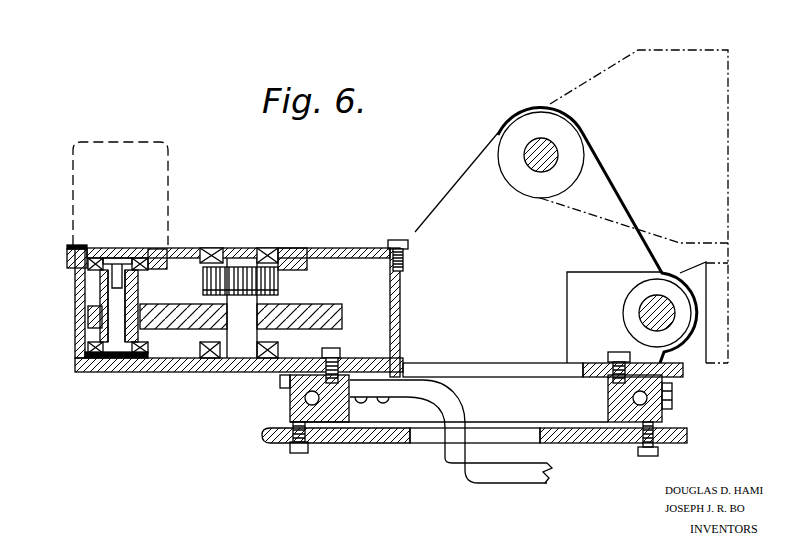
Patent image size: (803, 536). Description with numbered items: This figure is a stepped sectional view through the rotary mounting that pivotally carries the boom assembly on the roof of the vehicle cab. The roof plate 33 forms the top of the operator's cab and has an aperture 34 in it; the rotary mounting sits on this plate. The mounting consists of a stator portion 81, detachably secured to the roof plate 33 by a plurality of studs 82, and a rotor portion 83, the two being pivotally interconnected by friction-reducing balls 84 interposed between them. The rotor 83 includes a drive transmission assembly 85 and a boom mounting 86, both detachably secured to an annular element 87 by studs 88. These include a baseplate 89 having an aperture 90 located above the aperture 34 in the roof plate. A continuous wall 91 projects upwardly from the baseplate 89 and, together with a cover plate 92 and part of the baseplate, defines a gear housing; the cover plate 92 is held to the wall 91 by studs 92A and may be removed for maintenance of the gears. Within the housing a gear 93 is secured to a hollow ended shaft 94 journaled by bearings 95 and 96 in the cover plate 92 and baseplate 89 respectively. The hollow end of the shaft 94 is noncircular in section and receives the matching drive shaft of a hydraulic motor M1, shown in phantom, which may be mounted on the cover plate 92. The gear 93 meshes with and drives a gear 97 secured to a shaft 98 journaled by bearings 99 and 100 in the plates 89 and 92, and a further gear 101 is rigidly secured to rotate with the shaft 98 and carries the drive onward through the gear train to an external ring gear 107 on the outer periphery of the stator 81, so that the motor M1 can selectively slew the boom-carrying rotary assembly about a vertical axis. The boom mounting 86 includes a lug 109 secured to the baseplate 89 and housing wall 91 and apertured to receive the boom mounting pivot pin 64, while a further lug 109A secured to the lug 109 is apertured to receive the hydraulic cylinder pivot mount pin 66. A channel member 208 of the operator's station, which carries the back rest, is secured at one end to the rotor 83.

The motor M1 is at (112, 147).
The roof plate 33 is at (607, 443).
The aperture in roof plate 34 is at (527, 444).
The boom mounting pivot pin 64 is at (528, 150).
The hydraulic cylinder pivot mount pin 66 is at (667, 305).
The stator portion 81 is at (663, 393).
The studs 82 is at (295, 453).
The rotor portion 83 is at (607, 398).
The balls 84 is at (660, 420).
The drive transmission assembly 85 is at (306, 268).
The boom mounting 86 is at (599, 192).
The annular element 87 is at (351, 424).
The studs 88 is at (380, 334).
The baseplate 89 is at (342, 357).
The aperture 90 is at (505, 367).
The continuous wall 91 is at (78, 372).
The cover plate 92 is at (186, 248).
The studs 92A is at (74, 244).
The gear 93 is at (104, 330).
The hollow ended shaft 94 is at (113, 257).
The bearing 95 is at (136, 257).
The bearing 96 is at (121, 342).
The gear 97 is at (166, 330).
The shaft 98 is at (242, 345).
The bearing 99 is at (222, 358).
The bearing 100 is at (263, 262).
The gear 101 is at (289, 248).
The external ring gear 107 is at (281, 393).
The lug 109 is at (462, 183).
The lug 109A is at (590, 280).
The channel member 208 is at (483, 476).